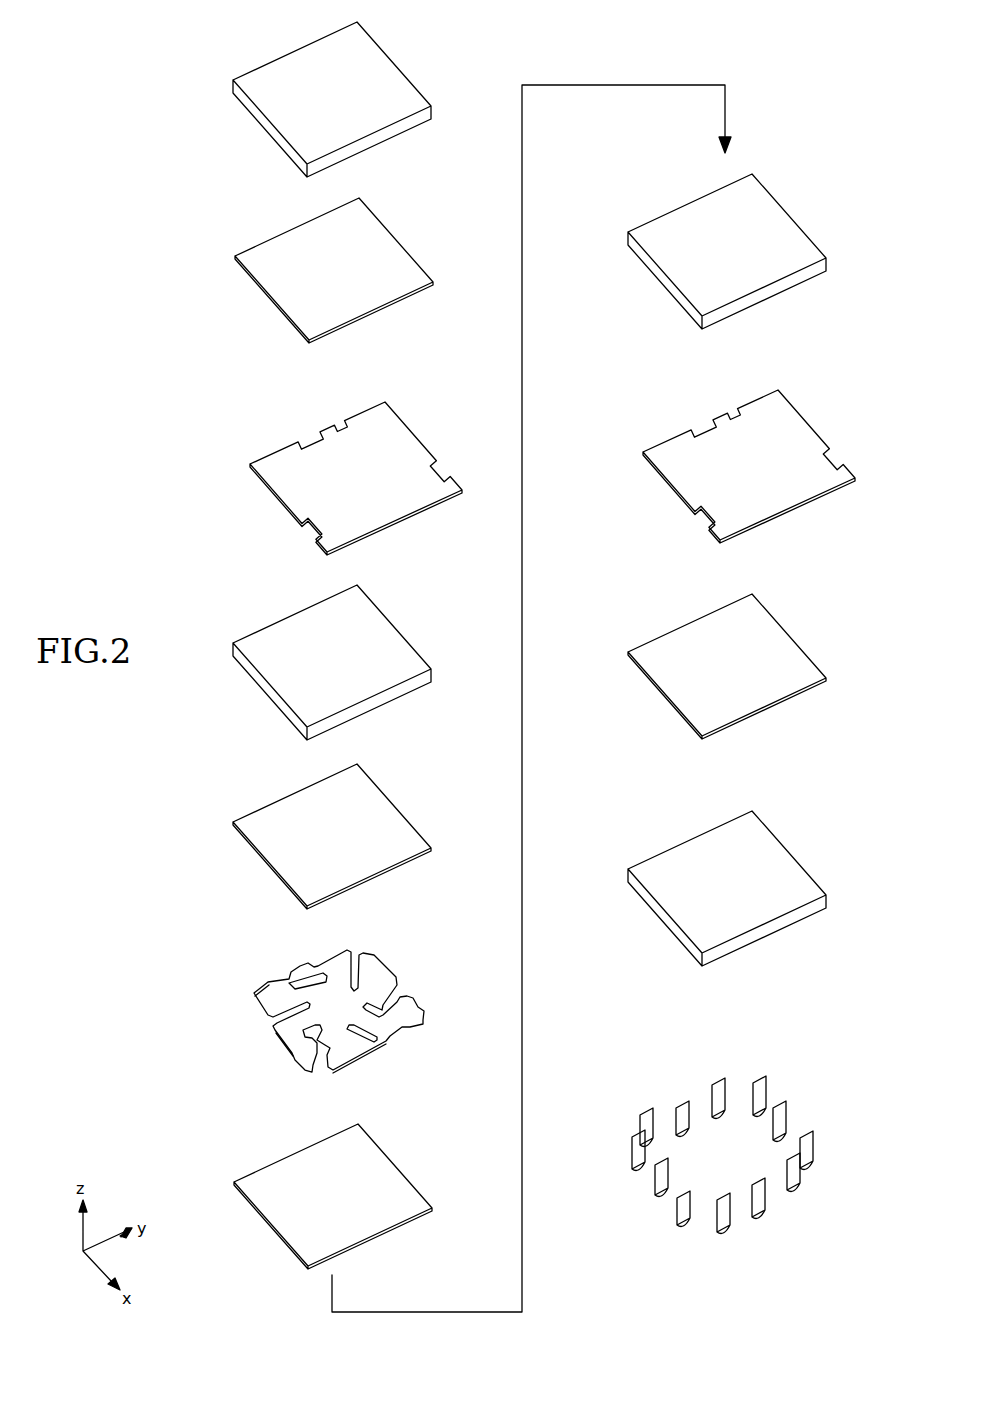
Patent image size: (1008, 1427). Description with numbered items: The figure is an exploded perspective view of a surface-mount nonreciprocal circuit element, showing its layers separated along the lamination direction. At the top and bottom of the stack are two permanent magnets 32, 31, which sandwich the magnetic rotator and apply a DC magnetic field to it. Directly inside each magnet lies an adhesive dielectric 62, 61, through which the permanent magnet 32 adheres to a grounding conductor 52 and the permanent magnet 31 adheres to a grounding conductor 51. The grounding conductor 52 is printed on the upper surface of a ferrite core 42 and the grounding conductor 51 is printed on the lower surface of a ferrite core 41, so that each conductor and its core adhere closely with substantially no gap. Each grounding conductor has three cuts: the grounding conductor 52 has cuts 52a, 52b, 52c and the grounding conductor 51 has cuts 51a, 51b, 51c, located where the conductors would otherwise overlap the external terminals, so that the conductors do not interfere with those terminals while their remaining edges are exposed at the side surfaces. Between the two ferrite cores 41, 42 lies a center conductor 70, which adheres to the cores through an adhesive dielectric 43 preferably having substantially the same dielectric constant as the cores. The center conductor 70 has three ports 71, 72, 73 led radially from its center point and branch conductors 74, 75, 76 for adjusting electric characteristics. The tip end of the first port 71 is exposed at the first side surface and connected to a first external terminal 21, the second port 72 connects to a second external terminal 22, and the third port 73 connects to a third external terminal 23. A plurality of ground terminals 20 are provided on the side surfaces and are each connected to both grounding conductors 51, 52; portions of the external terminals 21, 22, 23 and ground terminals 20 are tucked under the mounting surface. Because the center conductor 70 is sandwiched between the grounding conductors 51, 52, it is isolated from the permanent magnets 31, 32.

The ground terminals 20 is at (782, 1115).
The first external terminal 21 is at (676, 1218).
The second external terminal 22 is at (806, 1145).
The third external terminal 23 is at (684, 1112).
The permanent magnet 31 is at (670, 869).
The permanent magnet 32 is at (284, 70).
The ferrite core 41 is at (665, 232).
The ferrite core 42 is at (260, 643).
The dielectric 43 is at (260, 825).
The grounding conductor 51 is at (670, 452).
The cut 51a is at (705, 528).
The cut 51b is at (836, 465).
The cut 51c is at (700, 427).
The grounding conductor 52 is at (278, 464).
The cut 52a is at (312, 538).
The cut 52b is at (443, 475).
The cut 52c is at (302, 438).
The dielectric 61 is at (665, 652).
The dielectric 62 is at (272, 250).
The center conductor 70 is at (258, 962).
The first port 71 is at (297, 1062).
The second port 72 is at (422, 1007).
The third port 73 is at (296, 967).
The branch conductor 74 is at (361, 1060).
The branch conductor 75 is at (383, 968).
The branch conductor 76 is at (258, 1000).